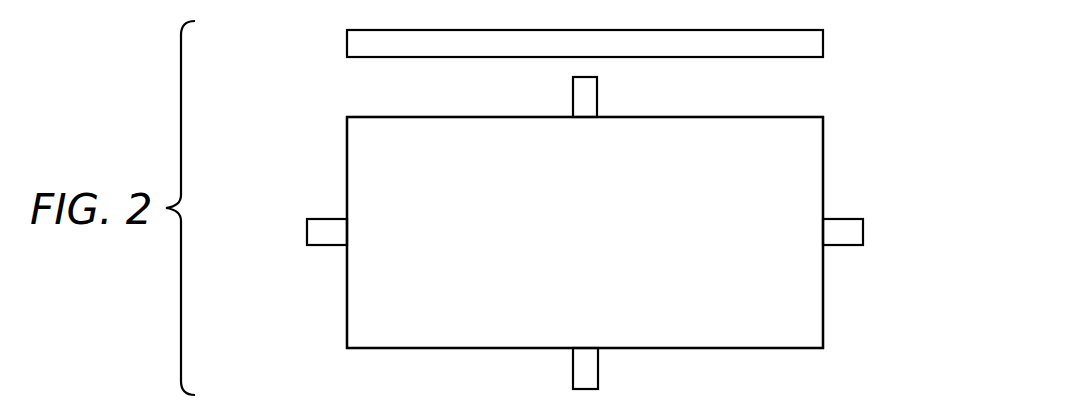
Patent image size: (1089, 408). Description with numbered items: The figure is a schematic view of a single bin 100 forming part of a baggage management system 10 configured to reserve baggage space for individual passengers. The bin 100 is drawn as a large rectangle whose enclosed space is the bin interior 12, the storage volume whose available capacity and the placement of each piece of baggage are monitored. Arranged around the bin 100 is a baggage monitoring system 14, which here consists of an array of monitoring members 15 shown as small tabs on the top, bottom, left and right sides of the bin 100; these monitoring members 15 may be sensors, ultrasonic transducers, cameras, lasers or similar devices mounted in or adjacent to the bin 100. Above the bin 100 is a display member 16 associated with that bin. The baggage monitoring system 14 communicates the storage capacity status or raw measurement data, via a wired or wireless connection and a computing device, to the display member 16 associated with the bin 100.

The baggage management system 10 is at (979, 89).
The bin interior 12 is at (789, 165).
The baggage monitoring system 14 is at (316, 330).
The monitoring members 15 is at (597, 97).
The display member 16 is at (823, 43).
The bin 100 is at (823, 133).